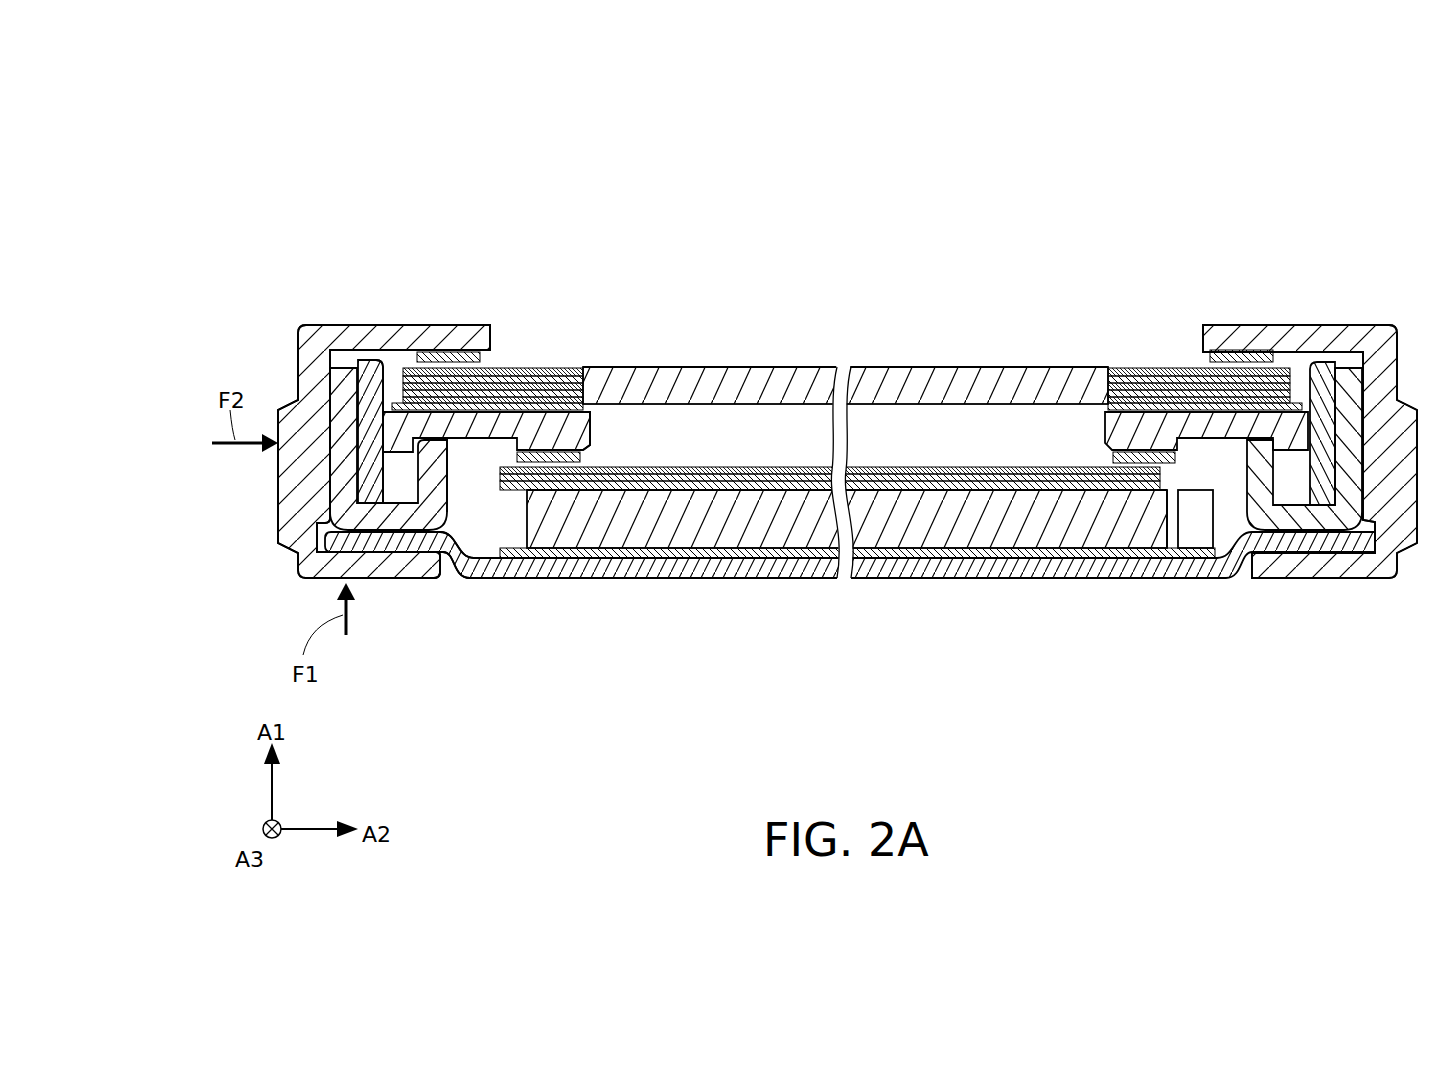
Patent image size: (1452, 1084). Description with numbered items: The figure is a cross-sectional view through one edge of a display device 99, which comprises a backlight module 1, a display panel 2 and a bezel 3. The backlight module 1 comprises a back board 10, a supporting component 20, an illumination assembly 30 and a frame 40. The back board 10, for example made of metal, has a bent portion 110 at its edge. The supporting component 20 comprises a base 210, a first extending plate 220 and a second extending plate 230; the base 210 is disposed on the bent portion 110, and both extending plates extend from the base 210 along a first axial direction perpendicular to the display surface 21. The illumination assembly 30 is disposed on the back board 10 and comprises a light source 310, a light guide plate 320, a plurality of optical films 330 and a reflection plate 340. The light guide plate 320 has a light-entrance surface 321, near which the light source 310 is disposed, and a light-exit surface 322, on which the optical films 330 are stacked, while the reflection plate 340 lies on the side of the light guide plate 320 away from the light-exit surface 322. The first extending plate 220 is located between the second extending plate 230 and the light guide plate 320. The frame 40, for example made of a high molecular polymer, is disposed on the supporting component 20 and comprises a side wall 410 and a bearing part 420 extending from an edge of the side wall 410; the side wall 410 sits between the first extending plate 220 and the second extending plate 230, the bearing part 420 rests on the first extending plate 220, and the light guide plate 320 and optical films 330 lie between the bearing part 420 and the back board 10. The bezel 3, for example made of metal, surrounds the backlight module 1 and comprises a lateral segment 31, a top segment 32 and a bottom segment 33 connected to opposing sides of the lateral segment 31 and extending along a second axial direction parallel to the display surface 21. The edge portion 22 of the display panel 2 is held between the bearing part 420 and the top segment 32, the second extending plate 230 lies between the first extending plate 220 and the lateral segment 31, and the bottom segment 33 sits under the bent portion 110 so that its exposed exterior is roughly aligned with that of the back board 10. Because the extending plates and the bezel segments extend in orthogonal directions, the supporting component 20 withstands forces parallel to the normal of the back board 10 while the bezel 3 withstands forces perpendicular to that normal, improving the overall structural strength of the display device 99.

The display device 99 is at (338, 150).
The backlight module 1 is at (601, 600).
The display panel 2 is at (727, 380).
The display surface 21 is at (965, 355).
The edge portion 22 is at (1296, 366).
The bezel 3 is at (187, 268).
The lateral segment 31 is at (290, 492).
The top segment 32 is at (352, 345).
The bottom segment 33 is at (345, 578).
The back board 10 is at (660, 568).
The bent portion 110 is at (455, 552).
The supporting component 20 is at (517, 652).
The base 210 is at (396, 522).
The first extending plate 220 is at (433, 492).
The second extending plate 230 is at (347, 490).
The illumination assembly 30 is at (1210, 652).
The light source 310 is at (1192, 530).
The light guide plate 320 is at (823, 523).
The light-entrance surface 321 is at (1172, 525).
The light-exit surface 322 is at (987, 468).
The optical films 330 is at (747, 483).
The reflection plate 340 is at (718, 560).
The frame 40 is at (557, 268).
The side wall 410 is at (385, 375).
The bearing part 420 is at (550, 430).